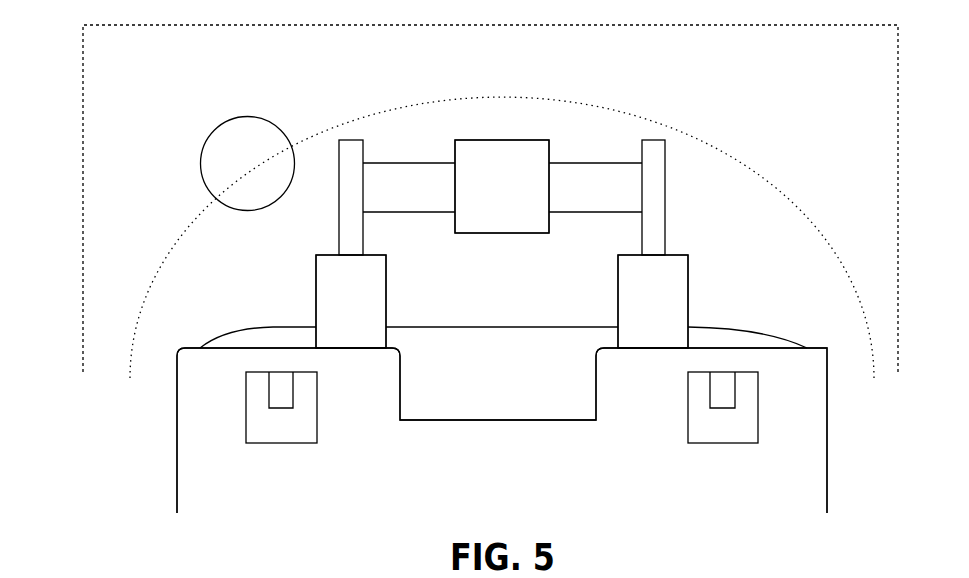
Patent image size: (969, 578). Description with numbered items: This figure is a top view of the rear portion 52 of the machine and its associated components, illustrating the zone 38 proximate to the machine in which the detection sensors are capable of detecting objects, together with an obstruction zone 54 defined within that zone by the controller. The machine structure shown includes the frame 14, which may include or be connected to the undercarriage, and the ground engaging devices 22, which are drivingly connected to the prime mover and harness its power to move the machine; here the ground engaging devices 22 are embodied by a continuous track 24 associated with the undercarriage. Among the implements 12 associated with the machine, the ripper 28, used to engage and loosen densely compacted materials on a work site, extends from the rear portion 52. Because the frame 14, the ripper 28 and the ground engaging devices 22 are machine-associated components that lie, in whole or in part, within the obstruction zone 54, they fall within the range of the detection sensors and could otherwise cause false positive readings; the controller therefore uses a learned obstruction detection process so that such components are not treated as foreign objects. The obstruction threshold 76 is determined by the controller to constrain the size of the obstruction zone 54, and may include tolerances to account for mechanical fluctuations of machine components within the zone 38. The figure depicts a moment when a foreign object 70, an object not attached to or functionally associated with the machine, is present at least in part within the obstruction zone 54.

The zone 38 is at (100, 121).
The obstruction threshold 76 is at (430, 100).
The foreign object 70 is at (252, 117).
The frame 14 is at (270, 325).
The ground engaging devices 22 is at (315, 255).
The continuous track 24 is at (502, 301).
The obstruction zone 54 is at (388, 138).
The implements 12 is at (525, 140).
The ripper 28 is at (502, 186).
The rear portion 52 is at (156, 442).